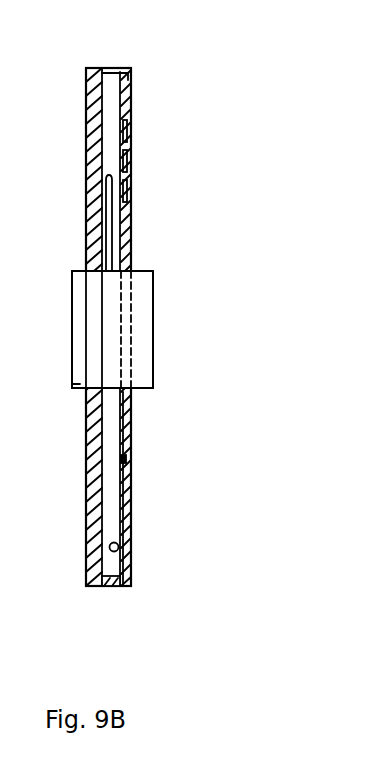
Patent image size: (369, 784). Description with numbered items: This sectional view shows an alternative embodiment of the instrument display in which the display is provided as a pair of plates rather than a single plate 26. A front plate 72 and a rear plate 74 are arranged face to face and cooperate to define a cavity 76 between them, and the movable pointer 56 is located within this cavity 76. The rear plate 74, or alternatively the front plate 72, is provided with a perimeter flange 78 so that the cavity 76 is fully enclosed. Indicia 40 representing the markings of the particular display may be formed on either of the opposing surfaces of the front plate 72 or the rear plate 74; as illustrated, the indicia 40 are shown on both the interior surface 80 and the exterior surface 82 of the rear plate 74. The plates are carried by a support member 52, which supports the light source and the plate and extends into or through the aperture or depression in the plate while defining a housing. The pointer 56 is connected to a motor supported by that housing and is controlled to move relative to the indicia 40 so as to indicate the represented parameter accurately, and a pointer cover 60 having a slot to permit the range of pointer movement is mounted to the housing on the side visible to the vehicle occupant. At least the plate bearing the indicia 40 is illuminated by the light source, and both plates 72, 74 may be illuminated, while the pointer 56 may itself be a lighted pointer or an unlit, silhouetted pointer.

The plate 26 is at (68, 553).
The indicia 40 is at (108, 78).
The support member 52 is at (143, 292).
The pointer 56 is at (122, 206).
The pointer cover 60 is at (78, 384).
The front plate 72 is at (86, 468).
The rear plate 74 is at (128, 520).
The cavity 76 is at (126, 460).
The perimeter flange 78 is at (110, 586).
The interior surface 80 is at (118, 553).
The exterior surface 82 is at (128, 418).